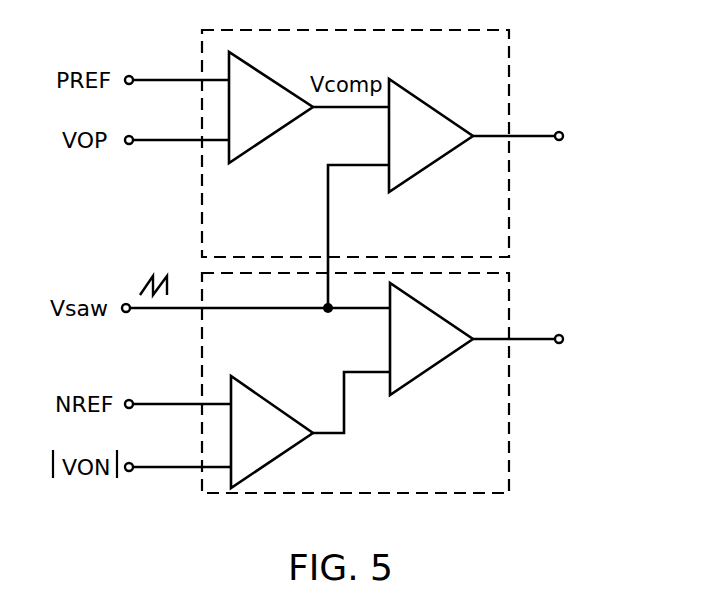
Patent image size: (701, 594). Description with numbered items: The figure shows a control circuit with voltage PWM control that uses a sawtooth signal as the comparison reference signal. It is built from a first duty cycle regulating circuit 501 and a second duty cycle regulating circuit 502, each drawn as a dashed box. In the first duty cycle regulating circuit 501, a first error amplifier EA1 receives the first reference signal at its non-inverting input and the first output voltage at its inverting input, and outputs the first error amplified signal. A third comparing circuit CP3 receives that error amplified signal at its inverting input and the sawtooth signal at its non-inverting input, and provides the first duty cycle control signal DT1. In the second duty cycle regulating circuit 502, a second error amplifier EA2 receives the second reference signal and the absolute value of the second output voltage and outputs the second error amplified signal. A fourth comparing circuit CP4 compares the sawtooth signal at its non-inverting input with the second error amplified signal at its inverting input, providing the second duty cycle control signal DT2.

The first duty cycle regulating circuit 501 is at (355, 143).
The second duty cycle regulating circuit 502 is at (355, 383).
The first error amplifier EA1 is at (271, 107).
The third comparing circuit CP3 is at (431, 135).
The second error amplifier EA2 is at (272, 432).
The fourth comparing circuit CP4 is at (431, 339).
The first duty cycle control signal DT1 is at (546, 136).
The second duty cycle control signal DT2 is at (546, 339).